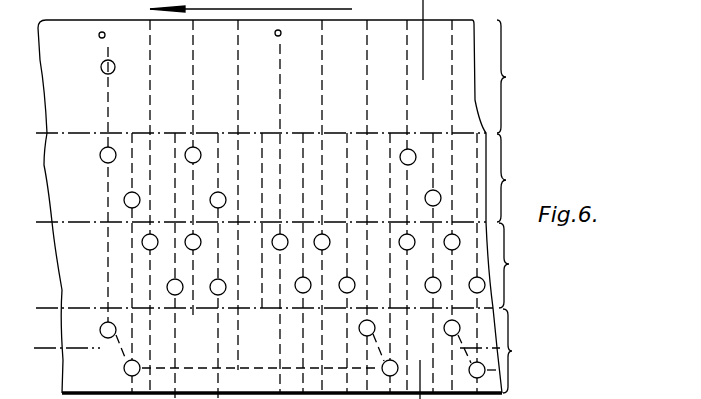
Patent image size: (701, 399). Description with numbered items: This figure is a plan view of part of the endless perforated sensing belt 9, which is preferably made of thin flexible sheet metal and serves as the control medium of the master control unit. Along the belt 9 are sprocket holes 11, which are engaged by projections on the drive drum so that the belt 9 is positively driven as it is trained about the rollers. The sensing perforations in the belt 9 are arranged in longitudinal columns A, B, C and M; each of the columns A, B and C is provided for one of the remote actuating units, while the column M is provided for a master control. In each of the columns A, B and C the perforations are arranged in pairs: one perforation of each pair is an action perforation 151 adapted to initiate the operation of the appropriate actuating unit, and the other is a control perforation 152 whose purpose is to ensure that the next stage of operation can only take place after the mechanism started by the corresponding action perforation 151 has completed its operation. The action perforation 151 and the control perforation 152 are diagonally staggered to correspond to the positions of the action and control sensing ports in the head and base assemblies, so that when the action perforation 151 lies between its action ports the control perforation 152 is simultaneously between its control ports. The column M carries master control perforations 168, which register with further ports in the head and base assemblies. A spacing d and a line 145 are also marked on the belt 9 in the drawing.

The sensing belt 9 is at (72, 50).
The sprocket holes 11 is at (105, 35).
The wale line 145 is at (154, 61).
The action perforation 151 is at (226, 196).
The control perforation 152 is at (197, 147).
The master control perforation 168 is at (102, 69).
The spacing distance d is at (218, 385).
The column M is at (511, 76).
The column A is at (509, 178).
The column B is at (512, 265).
The column C is at (512, 351).